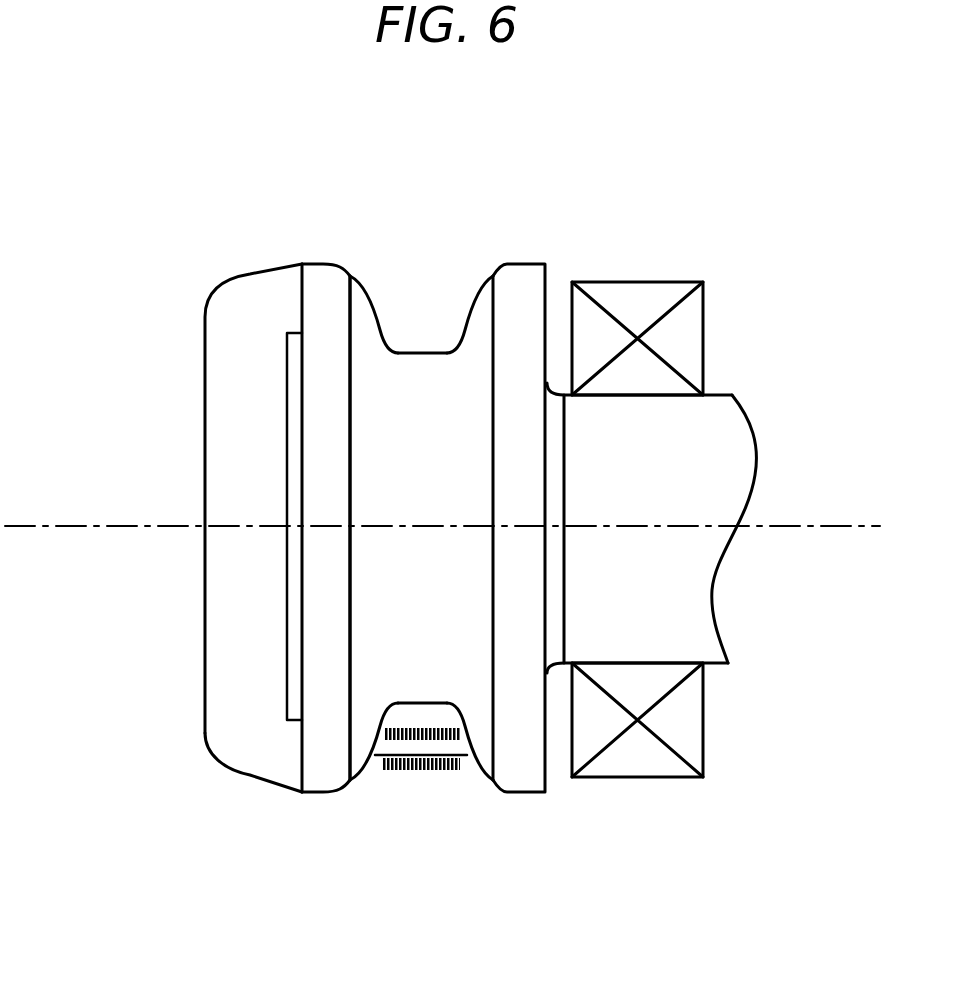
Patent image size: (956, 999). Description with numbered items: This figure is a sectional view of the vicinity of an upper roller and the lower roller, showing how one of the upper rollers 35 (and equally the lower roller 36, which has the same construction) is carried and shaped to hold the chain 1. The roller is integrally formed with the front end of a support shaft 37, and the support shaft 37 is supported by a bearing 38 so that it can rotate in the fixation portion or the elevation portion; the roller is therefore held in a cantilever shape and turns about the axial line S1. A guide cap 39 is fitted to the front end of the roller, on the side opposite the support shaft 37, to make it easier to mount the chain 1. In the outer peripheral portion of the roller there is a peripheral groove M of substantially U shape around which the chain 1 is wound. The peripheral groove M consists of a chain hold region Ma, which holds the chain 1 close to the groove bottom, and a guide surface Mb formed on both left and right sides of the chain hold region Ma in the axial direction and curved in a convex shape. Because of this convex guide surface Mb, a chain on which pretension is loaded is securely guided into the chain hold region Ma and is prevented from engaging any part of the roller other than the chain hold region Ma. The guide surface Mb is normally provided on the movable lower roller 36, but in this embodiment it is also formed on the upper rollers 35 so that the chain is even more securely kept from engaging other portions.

The chain 1 is at (422, 772).
The upper roller 35 is at (411, 472).
The lower roller 36 is at (423, 472).
The support shaft 37 is at (743, 460).
The bearing 38 is at (692, 340).
The guide cap 39 is at (212, 657).
The peripheral groove M is at (438, 466).
The chain hold region Ma is at (422, 353).
The guide surface Mb is at (360, 278).
The axial line S1 is at (442, 484).